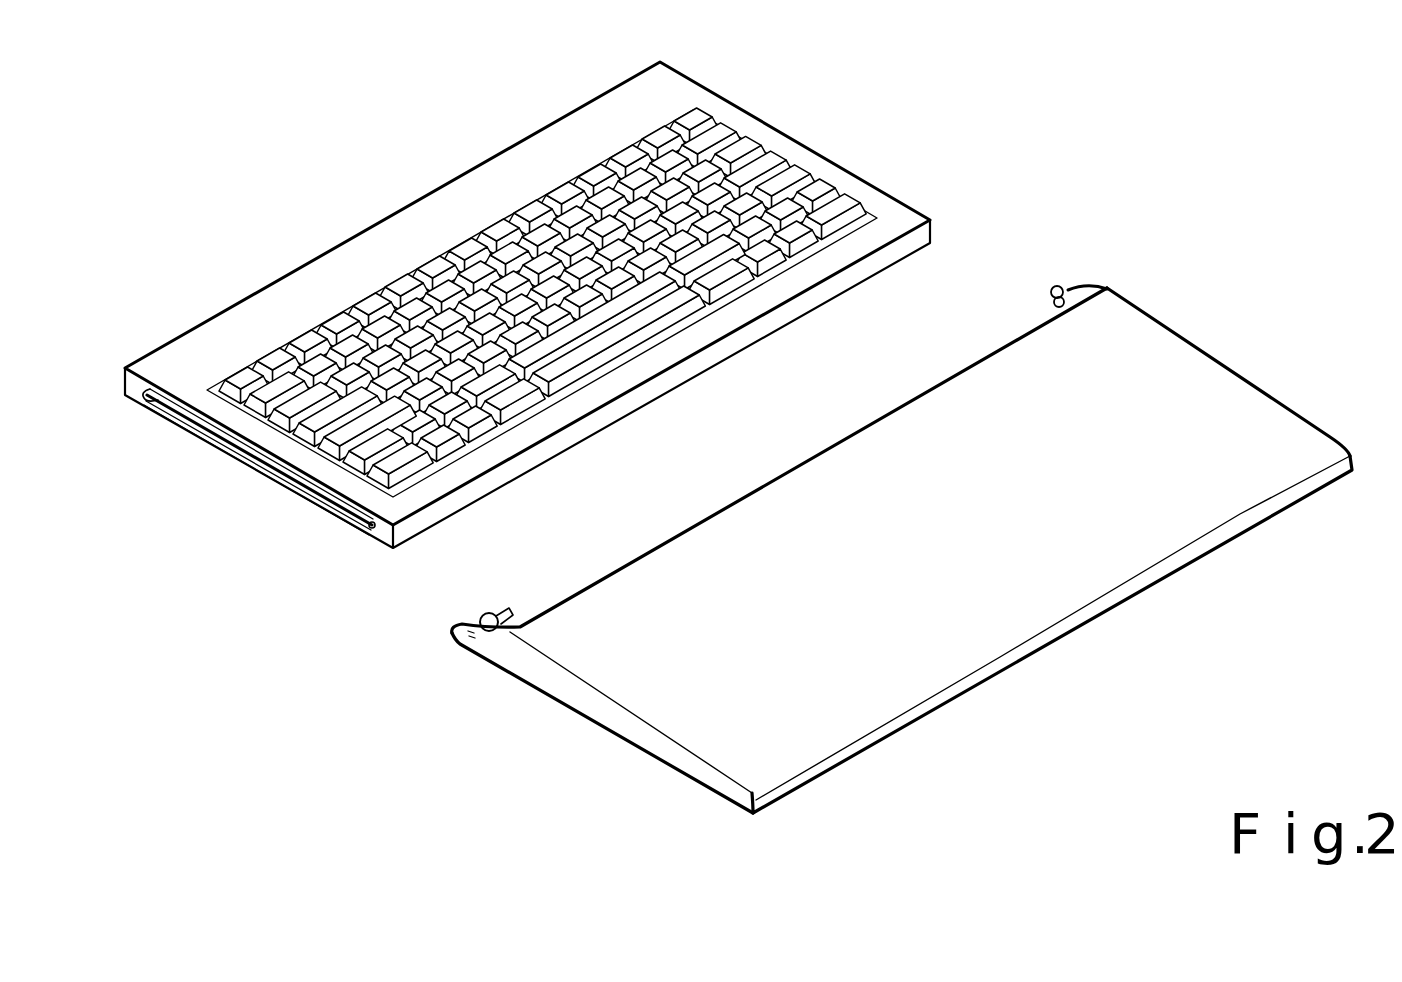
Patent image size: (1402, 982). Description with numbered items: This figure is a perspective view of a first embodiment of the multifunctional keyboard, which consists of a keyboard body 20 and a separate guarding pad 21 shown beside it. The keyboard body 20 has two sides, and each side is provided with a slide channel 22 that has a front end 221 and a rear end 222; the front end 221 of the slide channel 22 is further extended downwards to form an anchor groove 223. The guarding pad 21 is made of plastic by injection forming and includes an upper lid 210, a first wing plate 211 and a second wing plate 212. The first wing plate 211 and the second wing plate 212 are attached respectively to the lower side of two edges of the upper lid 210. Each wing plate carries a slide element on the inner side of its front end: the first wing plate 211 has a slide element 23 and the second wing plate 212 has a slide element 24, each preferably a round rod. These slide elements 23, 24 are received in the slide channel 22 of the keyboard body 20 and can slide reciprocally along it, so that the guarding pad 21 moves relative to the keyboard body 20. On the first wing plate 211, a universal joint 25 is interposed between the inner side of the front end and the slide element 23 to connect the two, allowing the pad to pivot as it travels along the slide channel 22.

The keyboard body 20 is at (498, 314).
The guarding pad 21 is at (887, 515).
The slide channel 22 is at (287, 477).
The slide element 23 is at (507, 606).
The slide element 24 is at (1073, 288).
The universal joint 25 is at (482, 613).
The upper lid 210 is at (848, 455).
The first wing plate 211 is at (591, 712).
The second wing plate 212 is at (1054, 287).
The front end 221 is at (160, 414).
The rear end 222 is at (368, 527).
The anchor groove 223 is at (147, 401).